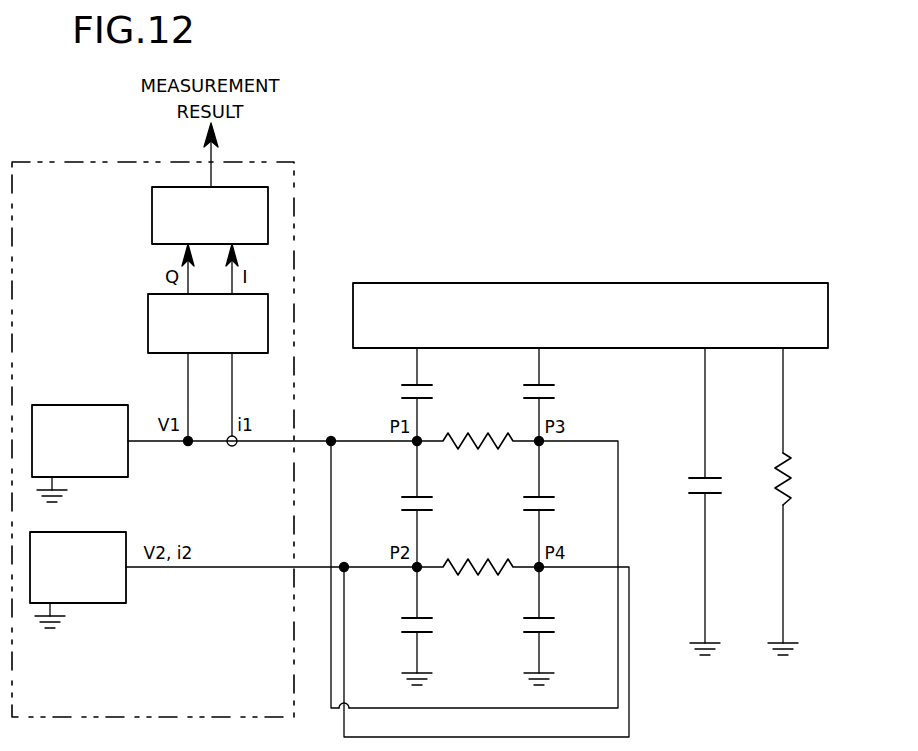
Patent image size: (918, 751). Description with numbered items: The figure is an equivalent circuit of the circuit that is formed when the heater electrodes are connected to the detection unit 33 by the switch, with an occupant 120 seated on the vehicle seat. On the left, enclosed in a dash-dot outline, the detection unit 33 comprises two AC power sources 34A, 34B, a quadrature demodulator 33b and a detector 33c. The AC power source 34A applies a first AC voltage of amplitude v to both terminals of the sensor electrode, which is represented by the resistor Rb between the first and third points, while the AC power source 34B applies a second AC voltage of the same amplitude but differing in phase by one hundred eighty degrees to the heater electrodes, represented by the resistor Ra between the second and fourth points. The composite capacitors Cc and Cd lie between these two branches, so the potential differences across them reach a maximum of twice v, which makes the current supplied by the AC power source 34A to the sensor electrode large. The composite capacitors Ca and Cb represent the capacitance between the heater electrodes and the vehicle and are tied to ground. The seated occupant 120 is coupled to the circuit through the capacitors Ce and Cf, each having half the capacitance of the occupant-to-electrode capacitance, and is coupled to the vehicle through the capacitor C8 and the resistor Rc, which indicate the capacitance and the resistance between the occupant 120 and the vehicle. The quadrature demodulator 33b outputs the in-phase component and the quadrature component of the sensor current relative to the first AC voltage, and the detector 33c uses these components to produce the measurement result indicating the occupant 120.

The detection unit 33 is at (279, 159).
The quadrature demodulator 33b is at (148, 313).
The detector 33c is at (152, 207).
The AC power source 34A is at (117, 405).
The AC power source 34B is at (117, 532).
The occupant 120 is at (782, 283).
The capacitor Ca is at (403, 625).
The capacitor Cb is at (555, 625).
The capacitor Cc is at (403, 504).
The capacitor Cd is at (555, 504).
The capacitor Ce is at (403, 392).
The capacitor Cf is at (554, 392).
The capacitor C8 is at (718, 501).
The resistor Ra is at (478, 556).
The resistor Rb is at (478, 429).
The resistor Rc is at (792, 501).